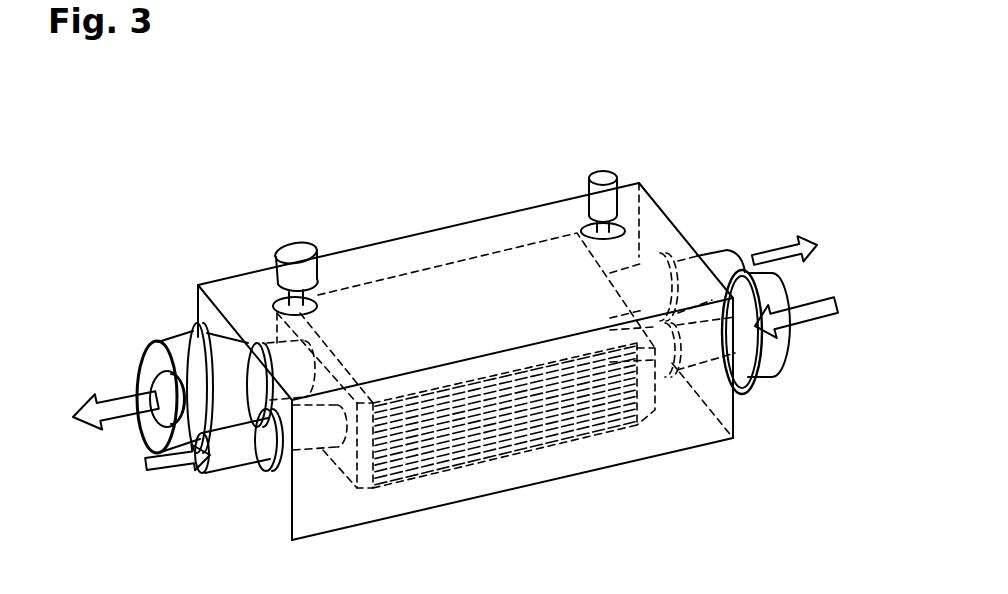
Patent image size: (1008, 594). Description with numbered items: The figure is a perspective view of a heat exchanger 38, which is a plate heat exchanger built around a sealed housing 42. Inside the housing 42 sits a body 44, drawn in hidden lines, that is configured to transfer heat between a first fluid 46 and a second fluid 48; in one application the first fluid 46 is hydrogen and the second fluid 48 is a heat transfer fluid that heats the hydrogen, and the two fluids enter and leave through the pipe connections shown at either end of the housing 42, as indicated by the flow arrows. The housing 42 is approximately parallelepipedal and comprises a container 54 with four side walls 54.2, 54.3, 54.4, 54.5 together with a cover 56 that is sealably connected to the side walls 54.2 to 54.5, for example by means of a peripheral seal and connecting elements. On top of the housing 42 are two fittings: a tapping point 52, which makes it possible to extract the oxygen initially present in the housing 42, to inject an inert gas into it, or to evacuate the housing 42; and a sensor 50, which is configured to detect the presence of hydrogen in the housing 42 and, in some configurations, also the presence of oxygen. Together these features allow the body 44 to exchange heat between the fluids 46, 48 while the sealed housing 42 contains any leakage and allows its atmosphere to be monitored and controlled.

The heat exchanger 38 is at (207, 200).
The housing 42 is at (418, 231).
The body 44 is at (518, 245).
The first fluid 46 is at (818, 326).
The second fluid 48 is at (167, 467).
The sensor 50 is at (290, 247).
The tapping point 52 is at (606, 176).
The container 54 is at (520, 478).
The side wall 54.2 is at (666, 203).
The side wall 54.3 is at (675, 418).
The side wall 54.4 is at (279, 496).
The side wall 54.5 is at (235, 277).
The cover 56 is at (382, 263).